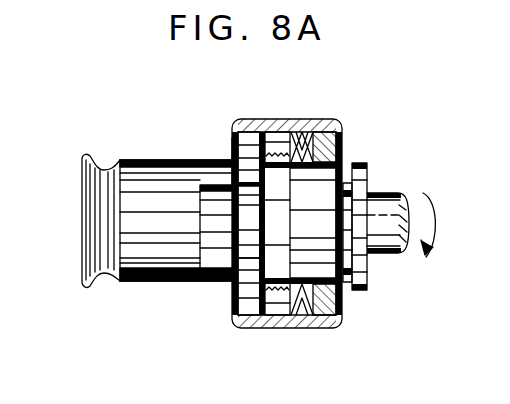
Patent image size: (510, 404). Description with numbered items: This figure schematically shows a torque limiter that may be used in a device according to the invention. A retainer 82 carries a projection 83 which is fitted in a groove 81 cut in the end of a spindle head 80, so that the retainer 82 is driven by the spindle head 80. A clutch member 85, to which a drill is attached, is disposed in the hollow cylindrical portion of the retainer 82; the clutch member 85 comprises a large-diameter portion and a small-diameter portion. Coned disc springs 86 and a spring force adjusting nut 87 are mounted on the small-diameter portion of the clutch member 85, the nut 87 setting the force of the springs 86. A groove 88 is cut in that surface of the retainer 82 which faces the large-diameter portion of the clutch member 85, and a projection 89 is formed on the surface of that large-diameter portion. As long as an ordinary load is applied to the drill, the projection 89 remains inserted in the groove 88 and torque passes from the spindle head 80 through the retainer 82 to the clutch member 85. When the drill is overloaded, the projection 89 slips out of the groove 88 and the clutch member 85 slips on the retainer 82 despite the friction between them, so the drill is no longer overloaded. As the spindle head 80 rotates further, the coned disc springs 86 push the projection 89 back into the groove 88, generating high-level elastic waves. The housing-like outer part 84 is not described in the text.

The spindle head 80 is at (166, 310).
The groove 81 is at (216, 243).
The retainer 82 is at (230, 138).
The projection 83 is at (211, 254).
The housing 84 is at (334, 120).
The clutch member 85 is at (345, 286).
The coned disc springs 86 is at (343, 151).
The spring force adjusting nut 87 is at (343, 130).
The groove 88 is at (240, 262).
The projection 89 is at (271, 310).